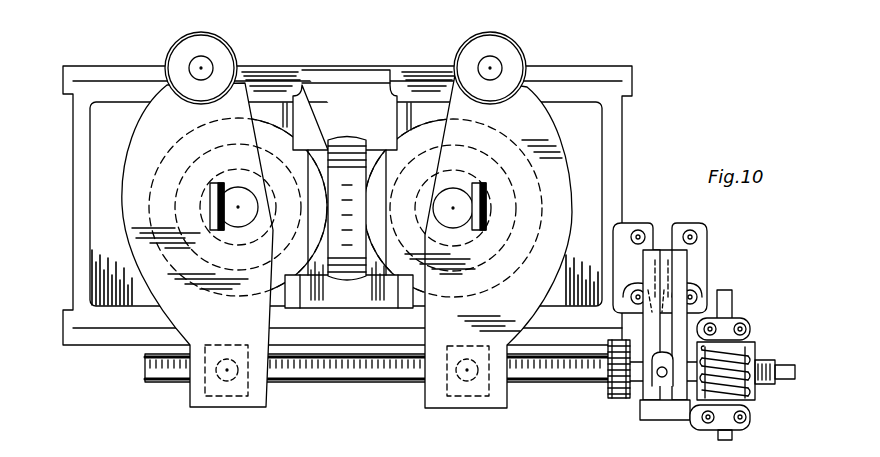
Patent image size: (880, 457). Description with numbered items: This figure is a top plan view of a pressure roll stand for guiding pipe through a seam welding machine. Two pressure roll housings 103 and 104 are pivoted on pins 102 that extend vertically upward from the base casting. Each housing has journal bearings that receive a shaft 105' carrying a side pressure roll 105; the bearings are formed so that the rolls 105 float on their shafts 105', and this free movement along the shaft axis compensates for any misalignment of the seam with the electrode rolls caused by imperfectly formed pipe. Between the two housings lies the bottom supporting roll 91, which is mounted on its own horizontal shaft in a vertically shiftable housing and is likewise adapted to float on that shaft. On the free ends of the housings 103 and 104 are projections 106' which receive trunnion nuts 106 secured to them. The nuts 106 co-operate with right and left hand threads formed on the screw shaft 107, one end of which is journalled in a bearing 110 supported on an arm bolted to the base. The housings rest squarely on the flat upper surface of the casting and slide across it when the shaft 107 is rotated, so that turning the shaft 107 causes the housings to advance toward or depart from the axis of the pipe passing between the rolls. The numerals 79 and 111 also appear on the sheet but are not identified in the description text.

The partial numeral (cut off) 79 is at (636, 6).
The roller 91 is at (353, 140).
The pulley 102 is at (200, 62).
The right arm plate 103 is at (530, 122).
The left arm plate 104 is at (167, 127).
The wheel 105 is at (354, 207).
The wheel hub shaft 105' is at (383, 256).
The bearing block 106 is at (343, 397).
The bearing block pin 106' is at (385, 401).
The threaded shaft 107 is at (381, 366).
The adjusting nut 110 is at (652, 353).
The bracket plate 111 is at (697, 267).